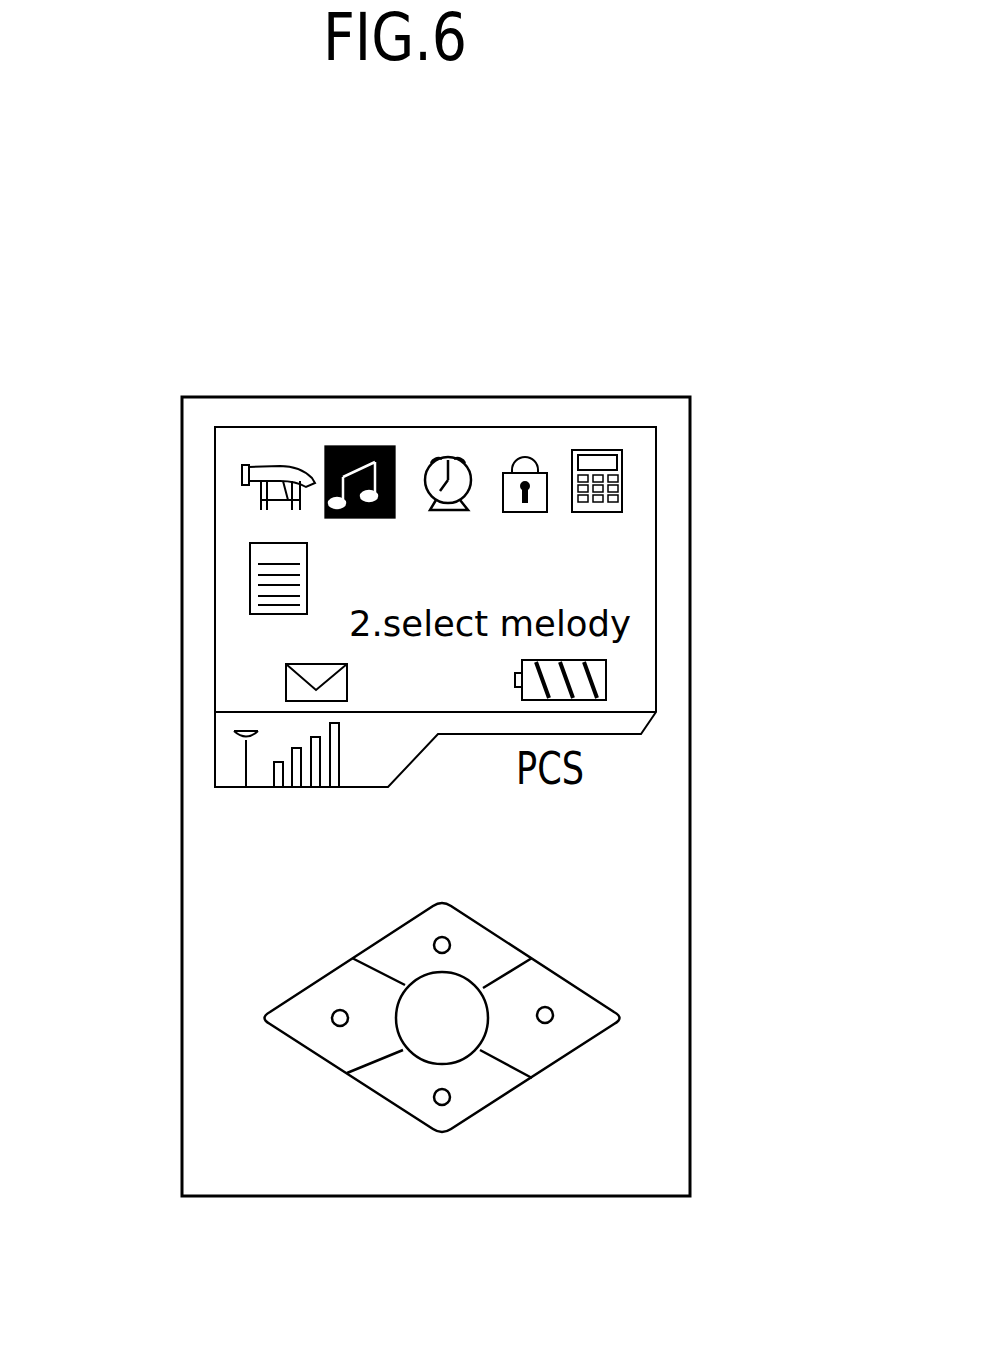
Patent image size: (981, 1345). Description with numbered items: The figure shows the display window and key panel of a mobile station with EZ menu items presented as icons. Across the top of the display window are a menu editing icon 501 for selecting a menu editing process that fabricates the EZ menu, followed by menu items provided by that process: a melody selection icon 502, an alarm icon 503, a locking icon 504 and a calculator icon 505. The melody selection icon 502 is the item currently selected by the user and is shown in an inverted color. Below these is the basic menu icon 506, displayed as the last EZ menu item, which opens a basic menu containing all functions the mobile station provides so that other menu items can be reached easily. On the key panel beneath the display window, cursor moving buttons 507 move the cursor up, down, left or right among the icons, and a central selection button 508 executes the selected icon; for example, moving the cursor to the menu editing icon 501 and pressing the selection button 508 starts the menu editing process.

The menu editing icon 501 is at (272, 465).
The melody selection icon 502 is at (351, 446).
The alarm icon 503 is at (456, 454).
The locking icon 504 is at (536, 458).
The calculator icon 505 is at (622, 480).
The basic menu icon 506 is at (250, 587).
The cursor moving buttons 507 is at (352, 1008).
The selection button 508 is at (408, 1036).